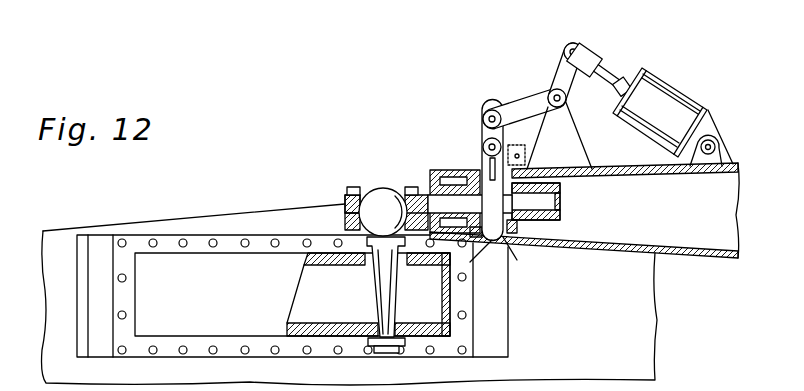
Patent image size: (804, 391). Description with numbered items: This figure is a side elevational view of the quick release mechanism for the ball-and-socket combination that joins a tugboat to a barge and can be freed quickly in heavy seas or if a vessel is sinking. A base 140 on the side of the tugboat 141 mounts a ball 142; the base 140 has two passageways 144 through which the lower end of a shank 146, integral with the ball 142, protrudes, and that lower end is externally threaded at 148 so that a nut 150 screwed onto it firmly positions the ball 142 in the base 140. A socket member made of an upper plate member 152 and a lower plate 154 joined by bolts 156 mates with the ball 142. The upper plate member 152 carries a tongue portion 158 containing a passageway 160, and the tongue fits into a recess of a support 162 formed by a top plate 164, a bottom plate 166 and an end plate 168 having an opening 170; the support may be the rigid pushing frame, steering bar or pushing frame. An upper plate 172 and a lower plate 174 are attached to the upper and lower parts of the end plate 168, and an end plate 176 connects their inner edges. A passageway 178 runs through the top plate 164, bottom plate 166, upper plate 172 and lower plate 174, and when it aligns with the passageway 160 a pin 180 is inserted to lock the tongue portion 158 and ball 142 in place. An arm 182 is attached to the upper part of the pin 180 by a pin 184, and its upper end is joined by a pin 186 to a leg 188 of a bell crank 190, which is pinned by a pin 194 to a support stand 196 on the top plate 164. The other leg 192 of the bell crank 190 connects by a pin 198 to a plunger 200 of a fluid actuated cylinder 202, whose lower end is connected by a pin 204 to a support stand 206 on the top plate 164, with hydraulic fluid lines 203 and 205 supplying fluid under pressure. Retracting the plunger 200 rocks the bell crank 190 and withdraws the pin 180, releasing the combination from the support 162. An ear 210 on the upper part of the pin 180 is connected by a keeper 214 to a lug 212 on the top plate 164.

The base 140 is at (165, 268).
The tugboat 141 is at (113, 211).
The ball 142 is at (378, 200).
The passageways 144 is at (375, 265).
The shank 146 is at (388, 302).
The external thread 148 is at (393, 354).
The nut 150 is at (368, 356).
The upper plate member 152 is at (347, 207).
The lower plate 154 is at (347, 220).
The bolts 156 is at (347, 197).
The tongue portion 158 is at (558, 207).
The passageway 160 is at (520, 226).
The support 162 is at (584, 228).
The top plate 164 is at (725, 173).
The bottom plate 166 is at (584, 239).
The end plate 168 is at (430, 173).
The opening 170 is at (432, 192).
The upper plate 172 is at (474, 216).
The lower plate 174 is at (468, 250).
The end plate 176 is at (555, 190).
The passageway 178 is at (492, 245).
The pin 180 is at (502, 238).
The arm 182 is at (483, 121).
The pin 184 is at (483, 148).
The pin 186 is at (482, 113).
The leg 188 is at (507, 107).
The bell crank 190 is at (510, 101).
The leg 192 is at (560, 72).
The pin 194 is at (572, 107).
The support stand 196 is at (593, 157).
The pin 198 is at (583, 28).
The plunger 200 is at (603, 72).
The fluid actuated cylinder 202 is at (667, 92).
The hydraulic fluid line 203 is at (658, 67).
The pin 204 is at (715, 142).
The hydraulic fluid line 205 is at (750, 78).
The support stand 206 is at (718, 147).
The ear 210 is at (536, 150).
The lug 212 is at (504, 140).
The keeper 214 is at (528, 157).